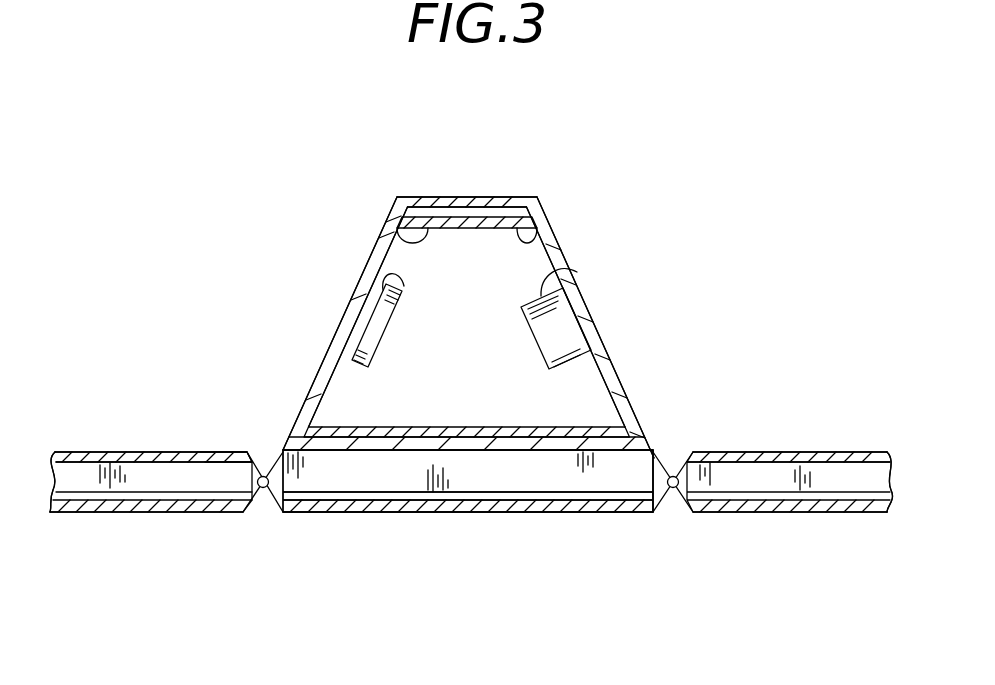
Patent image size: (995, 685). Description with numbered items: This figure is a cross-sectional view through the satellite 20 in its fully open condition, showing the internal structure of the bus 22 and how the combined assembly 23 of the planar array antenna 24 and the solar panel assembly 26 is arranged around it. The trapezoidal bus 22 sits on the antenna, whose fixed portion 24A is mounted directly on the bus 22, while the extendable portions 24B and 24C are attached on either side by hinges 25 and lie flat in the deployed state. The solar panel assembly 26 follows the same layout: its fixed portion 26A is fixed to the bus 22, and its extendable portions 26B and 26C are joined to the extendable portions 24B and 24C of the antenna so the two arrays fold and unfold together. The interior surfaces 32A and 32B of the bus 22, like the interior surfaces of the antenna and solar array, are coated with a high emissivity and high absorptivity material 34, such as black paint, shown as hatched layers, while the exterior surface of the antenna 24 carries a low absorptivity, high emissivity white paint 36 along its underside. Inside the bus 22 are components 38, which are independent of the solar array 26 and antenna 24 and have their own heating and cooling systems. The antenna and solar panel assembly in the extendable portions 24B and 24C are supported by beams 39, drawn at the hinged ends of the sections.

The satellite 20 is at (228, 136).
The bus 22 is at (478, 190).
The combined assembly 23 is at (409, 186).
The planar array antenna 24 is at (373, 522).
The fixed portion 24A is at (487, 514).
The extendable portion 24B is at (842, 514).
The extendable portion 24C is at (122, 514).
The hinges 25 is at (263, 494).
The solar panel assembly 26 is at (225, 443).
The fixed portion 26A is at (532, 197).
The extendable portion 26B is at (757, 452).
The extendable portion 26C is at (113, 452).
The interior surface 32A is at (395, 242).
The interior surface 32B is at (347, 436).
The high emissivity and high absorptivity material 34 is at (556, 221).
The white paint 36 is at (200, 514).
The components 38 is at (385, 267).
The beams 39 is at (52, 455).